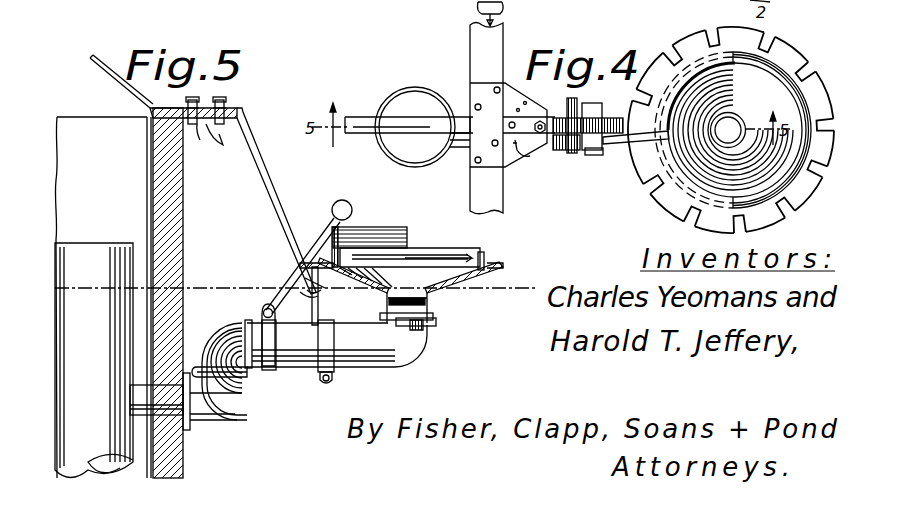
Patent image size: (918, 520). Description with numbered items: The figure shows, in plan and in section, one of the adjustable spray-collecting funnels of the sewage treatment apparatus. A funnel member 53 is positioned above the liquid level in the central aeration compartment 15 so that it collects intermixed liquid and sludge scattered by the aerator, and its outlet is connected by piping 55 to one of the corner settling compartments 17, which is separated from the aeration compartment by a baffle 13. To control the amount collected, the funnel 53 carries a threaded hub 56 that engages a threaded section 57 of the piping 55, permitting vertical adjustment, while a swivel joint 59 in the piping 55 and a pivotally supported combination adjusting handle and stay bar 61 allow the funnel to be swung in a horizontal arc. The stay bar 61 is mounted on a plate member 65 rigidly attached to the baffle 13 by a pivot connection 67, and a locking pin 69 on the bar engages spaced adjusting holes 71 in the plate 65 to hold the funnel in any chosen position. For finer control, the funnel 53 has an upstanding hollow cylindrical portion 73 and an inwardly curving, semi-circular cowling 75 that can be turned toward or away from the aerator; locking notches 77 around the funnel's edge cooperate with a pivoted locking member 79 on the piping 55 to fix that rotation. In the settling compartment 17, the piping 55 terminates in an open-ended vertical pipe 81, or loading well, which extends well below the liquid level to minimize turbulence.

In FIG. 5, the baffle 13 is at (180, 196).
In FIG. 4, the baffle 13 is at (482, 42).
In FIG. 5, the central compartment 15 is at (212, 229).
In FIG. 4, the central compartment 15 is at (531, 208).
In FIG. 5, the corner compartment 17 is at (105, 181).
In FIG. 4, the corner compartment 17 is at (456, 193).
In FIG. 5, the funnel member 53 is at (440, 262).
In FIG. 4, the funnel member 53 is at (780, 80).
In FIG. 5, the piping 55 is at (348, 330).
In FIG. 4, the piping 55 is at (610, 112).
In FIG. 5, the threaded hub 56 is at (427, 302).
In FIG. 5, the threaded section 57 is at (433, 310).
In FIG. 4, the threaded section 57 is at (740, 118).
In FIG. 5, the swivel joint 59 is at (247, 376).
In FIG. 5, the combination adjusting handle and stay bar 61 is at (270, 168).
In FIG. 4, the combination adjusting handle and stay bar 61 is at (453, 117).
In FIG. 5, the plate member 65 is at (227, 138).
In FIG. 4, the plate member 65 is at (483, 88).
In FIG. 5, the pivot connection 67 is at (226, 104).
In FIG. 4, the pivot connection 67 is at (542, 120).
In FIG. 5, the locking pin 69 is at (195, 97).
In FIG. 4, the locking pin 69 is at (512, 122).
In FIG. 5, the adjusting hole 71 is at (200, 140).
In FIG. 4, the adjusting hole 71 is at (520, 163).
In FIG. 5, the hollow cylindrical portion 73 is at (487, 257).
In FIG. 4, the hollow cylindrical portion 73 is at (770, 68).
In FIG. 5, the cowling 75 is at (360, 233).
In FIG. 4, the cowling 75 is at (672, 72).
In FIG. 5, the locking notch 77 is at (312, 240).
In FIG. 4, the locking notch 77 is at (708, 32).
In FIG. 5, the locking member 79 is at (330, 212).
In FIG. 4, the locking member 79 is at (635, 158).
In FIG. 5, the vertical pipe 81 is at (104, 258).
In FIG. 4, the vertical pipe 81 is at (407, 88).